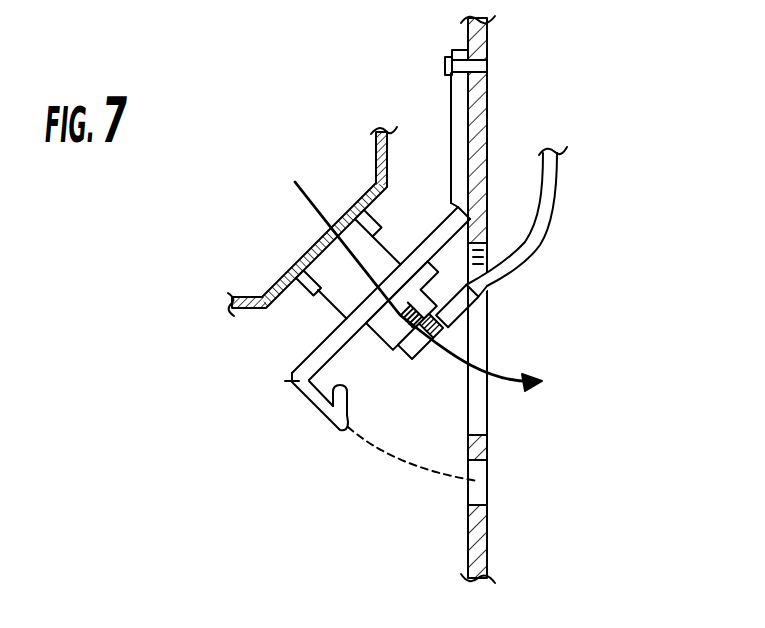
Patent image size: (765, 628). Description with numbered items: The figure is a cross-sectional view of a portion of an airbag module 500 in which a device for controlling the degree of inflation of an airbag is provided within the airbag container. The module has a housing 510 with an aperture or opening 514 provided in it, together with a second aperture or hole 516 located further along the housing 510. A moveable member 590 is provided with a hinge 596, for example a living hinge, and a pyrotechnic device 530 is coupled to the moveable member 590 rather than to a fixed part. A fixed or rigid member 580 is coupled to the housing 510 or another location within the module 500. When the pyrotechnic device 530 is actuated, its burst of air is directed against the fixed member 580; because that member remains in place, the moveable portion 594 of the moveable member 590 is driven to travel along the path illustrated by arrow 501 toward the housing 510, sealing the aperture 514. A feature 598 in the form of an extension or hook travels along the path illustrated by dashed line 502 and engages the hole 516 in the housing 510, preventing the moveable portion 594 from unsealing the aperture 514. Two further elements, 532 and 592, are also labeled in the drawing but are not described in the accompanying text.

The airbag module 500 is at (580, 116).
The arrow 501 is at (500, 372).
The dashed line 502 is at (373, 452).
The housing 510 is at (481, 177).
The aperture 514 is at (477, 340).
The aperture or hole 516 is at (478, 477).
The pyrotechnic device 530 is at (347, 283).
The pivot arm 532 is at (538, 235).
The fixed or rigid member 580 is at (375, 146).
The moveable member 590 is at (287, 381).
The bolt 592 is at (458, 137).
The moveable portion 594 is at (308, 352).
The hinge 596 is at (452, 203).
The feature 598 is at (345, 403).